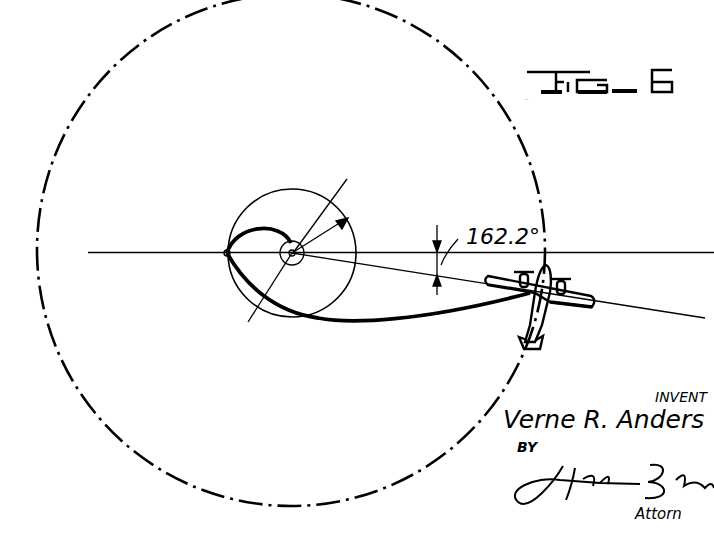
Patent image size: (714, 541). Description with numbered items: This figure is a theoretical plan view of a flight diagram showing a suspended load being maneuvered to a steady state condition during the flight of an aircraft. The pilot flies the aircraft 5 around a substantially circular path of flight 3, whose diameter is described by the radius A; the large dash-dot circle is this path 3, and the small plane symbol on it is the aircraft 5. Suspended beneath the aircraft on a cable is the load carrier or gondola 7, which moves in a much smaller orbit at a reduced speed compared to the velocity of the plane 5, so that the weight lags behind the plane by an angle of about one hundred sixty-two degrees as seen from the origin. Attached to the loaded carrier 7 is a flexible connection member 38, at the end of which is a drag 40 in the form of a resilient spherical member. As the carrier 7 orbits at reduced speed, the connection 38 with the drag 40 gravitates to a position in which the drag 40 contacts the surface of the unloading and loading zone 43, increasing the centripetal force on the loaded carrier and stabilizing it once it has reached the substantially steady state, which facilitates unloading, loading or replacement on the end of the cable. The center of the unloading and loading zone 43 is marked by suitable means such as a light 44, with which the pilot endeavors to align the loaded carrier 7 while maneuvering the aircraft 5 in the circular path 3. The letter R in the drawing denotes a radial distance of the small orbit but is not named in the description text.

The path of flight 3 is at (111, 70).
The aircraft 5 is at (552, 317).
The load carrier or gondola 7 is at (221, 257).
The connection member 38 is at (268, 226).
The drag 40 is at (336, 205).
The unloading and loading zone 43 is at (253, 309).
The light 44 is at (302, 258).
The radius A is at (347, 206).
The radius R is at (327, 238).